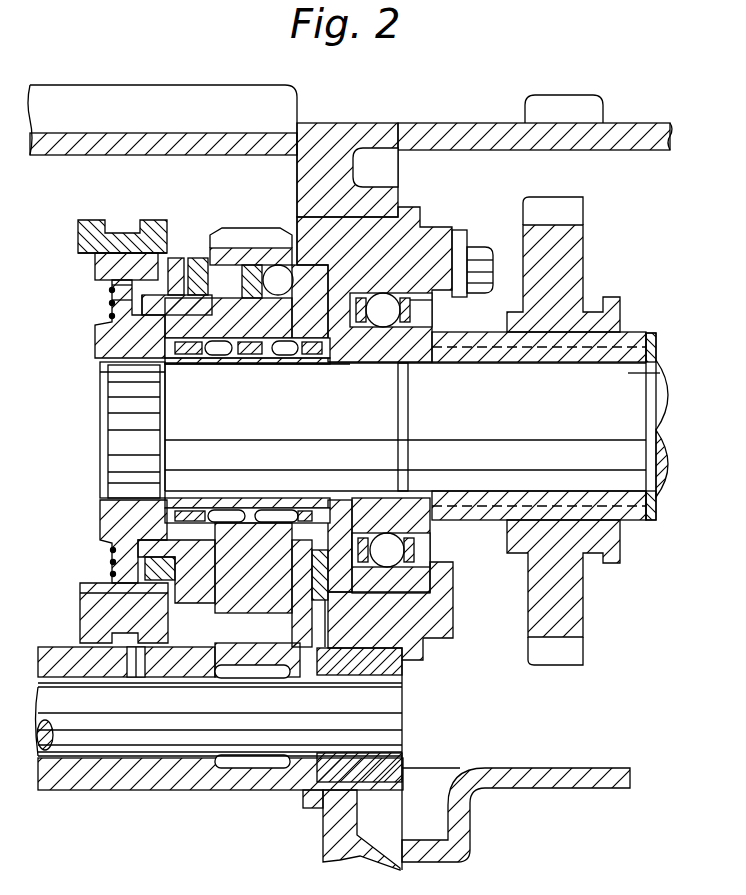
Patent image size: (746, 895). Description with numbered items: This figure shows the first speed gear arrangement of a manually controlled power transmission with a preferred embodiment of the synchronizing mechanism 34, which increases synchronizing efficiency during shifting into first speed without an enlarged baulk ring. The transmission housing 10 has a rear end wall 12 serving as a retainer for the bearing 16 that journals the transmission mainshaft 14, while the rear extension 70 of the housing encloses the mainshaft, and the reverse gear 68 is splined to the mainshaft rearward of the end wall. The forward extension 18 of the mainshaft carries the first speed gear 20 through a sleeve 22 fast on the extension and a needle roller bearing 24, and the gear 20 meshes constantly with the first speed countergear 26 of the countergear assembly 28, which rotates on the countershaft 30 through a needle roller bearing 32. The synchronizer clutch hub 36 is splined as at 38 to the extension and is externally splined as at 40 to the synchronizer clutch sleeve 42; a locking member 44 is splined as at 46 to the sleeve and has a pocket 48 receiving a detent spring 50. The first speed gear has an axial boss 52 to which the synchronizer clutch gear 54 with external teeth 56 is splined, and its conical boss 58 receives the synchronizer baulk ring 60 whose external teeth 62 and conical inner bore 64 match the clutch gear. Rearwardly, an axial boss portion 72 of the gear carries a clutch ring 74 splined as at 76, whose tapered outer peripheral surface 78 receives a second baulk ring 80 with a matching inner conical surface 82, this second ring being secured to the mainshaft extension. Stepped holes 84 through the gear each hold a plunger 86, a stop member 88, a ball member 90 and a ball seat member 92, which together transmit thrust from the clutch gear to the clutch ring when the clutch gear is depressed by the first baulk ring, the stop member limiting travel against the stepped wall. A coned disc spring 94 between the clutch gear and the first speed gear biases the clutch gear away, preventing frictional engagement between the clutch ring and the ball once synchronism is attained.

The power transmission housing 10 is at (68, 155).
The rear end wall 12 is at (453, 640).
The transmission mainshaft 14 is at (613, 457).
The bearing 16 is at (440, 563).
The forward extension 18 is at (165, 455).
The first speed gear 20 is at (268, 240).
The sleeve 22 is at (240, 445).
The needle roller bearing 24 is at (300, 300).
The first speed countergear 26 is at (235, 795).
The countergear assembly 28 is at (100, 800).
The countershaft 30 is at (135, 745).
The needle roller bearing 32 is at (262, 790).
The synchronizing mechanism 34 is at (75, 262).
The synchronizer clutch hub 36 is at (105, 352).
The spline 38 is at (100, 372).
The external spline 40 is at (85, 595).
The synchronizer clutch sleeve 42 is at (128, 228).
The locking member 44 is at (95, 268).
The external spline 46 is at (100, 235).
The pocket 48 is at (110, 290).
The detent spring 50 is at (105, 322).
The axial boss 52 is at (178, 320).
The synchronizer clutch gear 54 is at (176, 368).
The external teeth 56 is at (198, 262).
The conical boss 58 is at (110, 303).
The synchronizer baulk ring 60 is at (172, 258).
The external teeth 62 is at (176, 262).
The inner bore 64 is at (130, 350).
The reverse gear 68 is at (583, 620).
The rear extension 70 is at (484, 150).
The axial boss portion 72 is at (316, 365).
The clutch ring 74 is at (362, 198).
The spline 76 is at (350, 320).
The outer peripheral surface 78 is at (345, 255).
The second baulk ring 80 is at (362, 328).
The inner conical surface 82 is at (285, 358).
The stepped hole 84 is at (252, 262).
The plunger 86 is at (268, 272).
The stop member 88 is at (228, 358).
The ball member 90 is at (340, 185).
The ball seat member 92 is at (258, 358).
The disc spring 94 is at (205, 368).